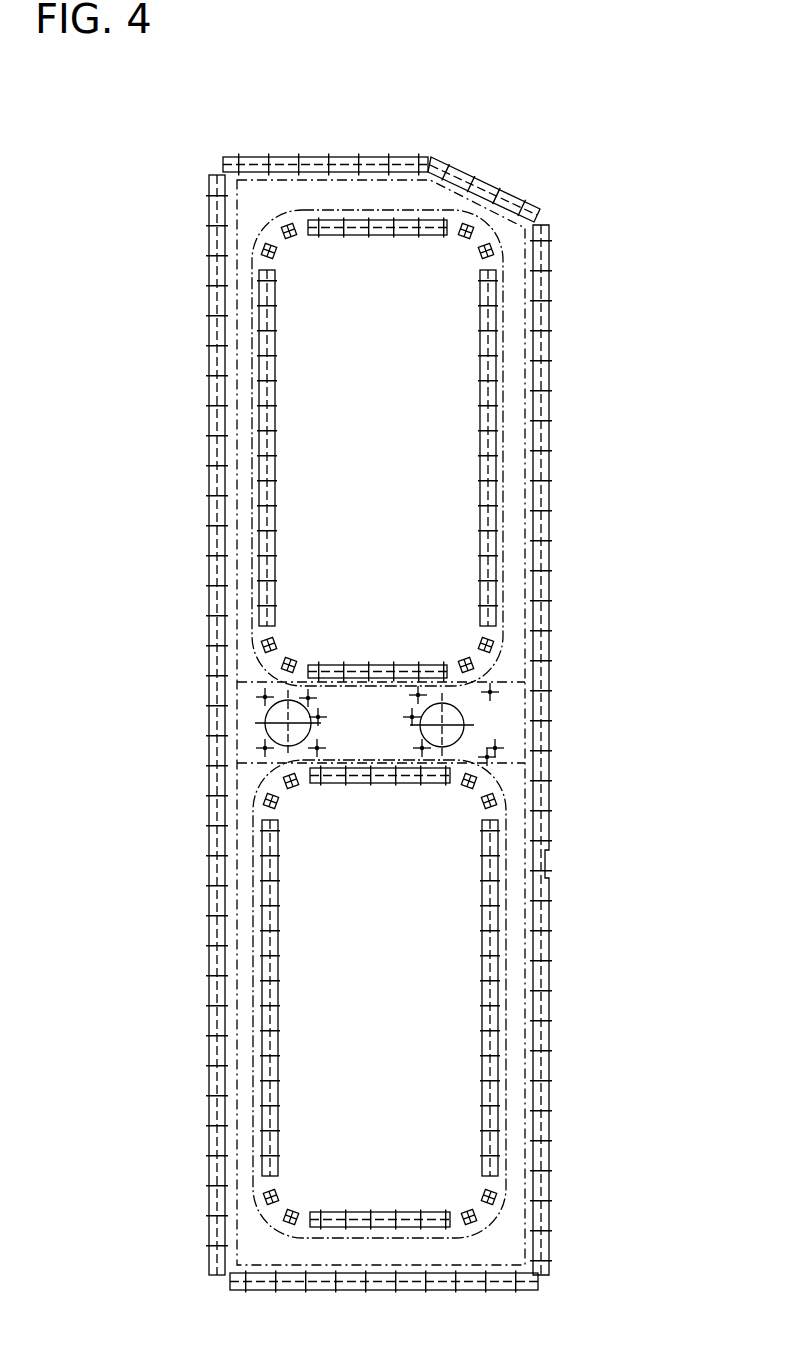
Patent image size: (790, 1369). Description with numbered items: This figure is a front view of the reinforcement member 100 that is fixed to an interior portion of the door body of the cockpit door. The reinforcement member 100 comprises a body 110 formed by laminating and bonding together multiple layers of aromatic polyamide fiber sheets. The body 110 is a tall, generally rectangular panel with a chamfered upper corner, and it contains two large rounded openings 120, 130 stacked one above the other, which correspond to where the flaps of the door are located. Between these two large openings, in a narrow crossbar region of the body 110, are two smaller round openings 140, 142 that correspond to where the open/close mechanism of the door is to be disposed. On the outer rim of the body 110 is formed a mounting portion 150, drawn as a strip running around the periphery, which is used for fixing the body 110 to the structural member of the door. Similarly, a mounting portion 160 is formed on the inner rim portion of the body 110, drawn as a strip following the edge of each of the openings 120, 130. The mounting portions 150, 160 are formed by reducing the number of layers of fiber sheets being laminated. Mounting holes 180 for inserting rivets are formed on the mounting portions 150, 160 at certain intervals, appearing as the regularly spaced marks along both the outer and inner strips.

The reinforcement member 100 is at (496, 160).
The body 110 is at (318, 200).
The opening 120 is at (382, 485).
The opening 130 is at (390, 1055).
The opening 140 is at (458, 717).
The opening 142 is at (266, 727).
The mounting portion 150 is at (211, 491).
The mounting portion 160 is at (273, 618).
The mounting holes 180 is at (300, 237).